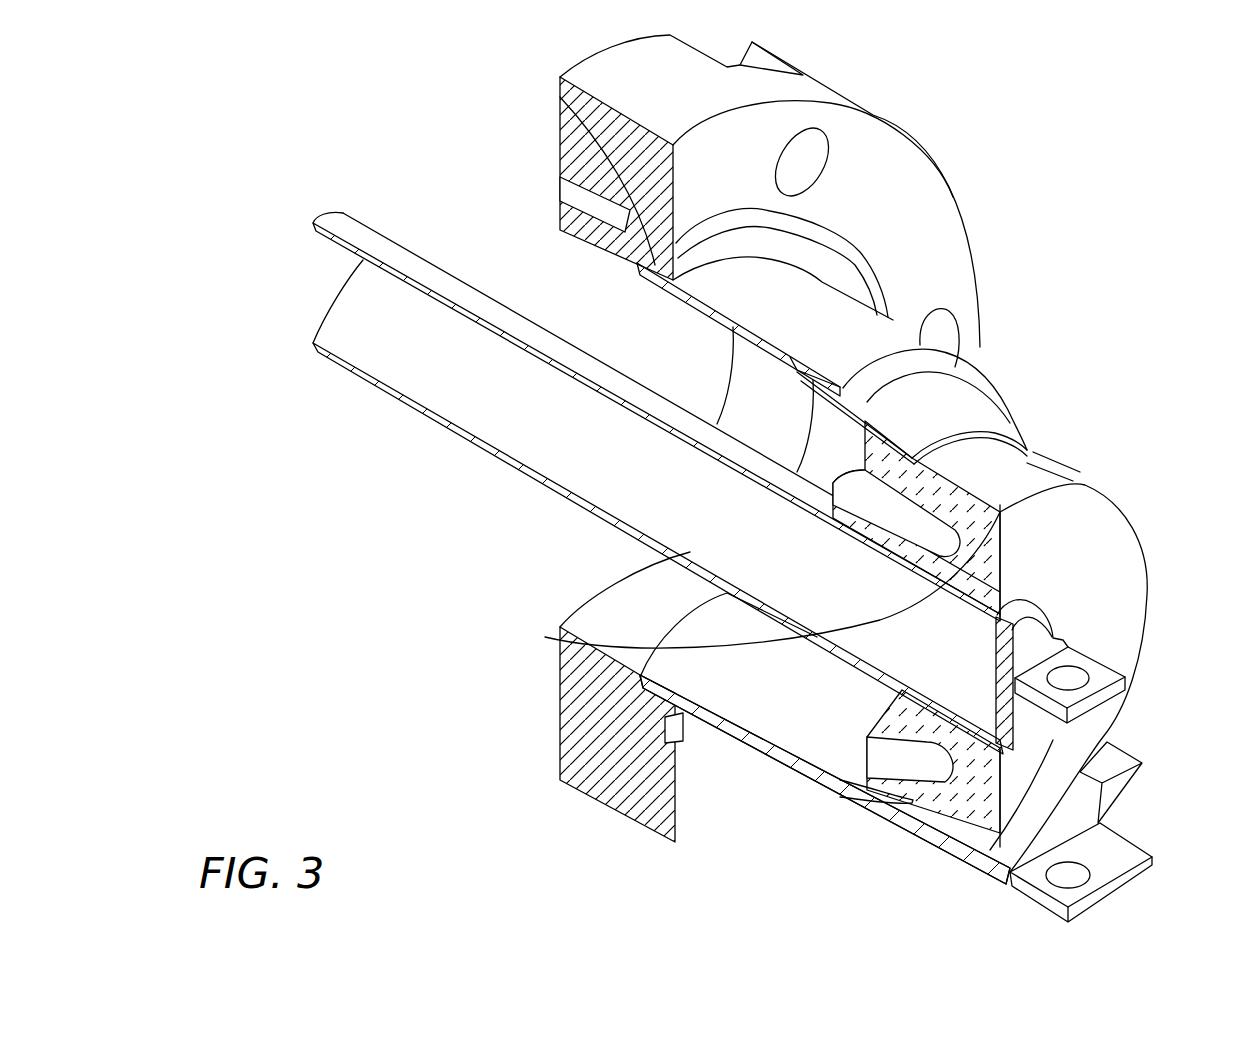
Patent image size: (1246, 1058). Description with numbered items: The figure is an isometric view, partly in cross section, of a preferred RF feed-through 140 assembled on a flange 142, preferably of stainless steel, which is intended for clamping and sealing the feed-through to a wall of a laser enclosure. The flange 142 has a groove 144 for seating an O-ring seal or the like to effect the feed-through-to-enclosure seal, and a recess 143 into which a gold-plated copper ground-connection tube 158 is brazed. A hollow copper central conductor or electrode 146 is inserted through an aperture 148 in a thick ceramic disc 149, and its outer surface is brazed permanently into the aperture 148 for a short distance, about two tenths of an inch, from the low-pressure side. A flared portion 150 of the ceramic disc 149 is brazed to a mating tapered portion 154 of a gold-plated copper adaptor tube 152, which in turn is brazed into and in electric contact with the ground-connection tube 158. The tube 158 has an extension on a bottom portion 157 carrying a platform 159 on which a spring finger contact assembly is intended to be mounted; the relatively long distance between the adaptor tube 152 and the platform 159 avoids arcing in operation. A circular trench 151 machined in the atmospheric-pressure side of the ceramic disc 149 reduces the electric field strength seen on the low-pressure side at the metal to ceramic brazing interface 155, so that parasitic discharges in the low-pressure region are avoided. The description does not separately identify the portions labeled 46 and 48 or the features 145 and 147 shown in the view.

The first conduit 46 is at (497, 236).
The second conduit 48 is at (1220, 557).
The RF feed-through 140 is at (346, 597).
The flange 142 is at (950, 166).
The recess 143 is at (640, 262).
The groove 144 is at (837, 248).
The mounting tab 145 is at (1103, 670).
The hollow central conductor 146 is at (462, 446).
The housing lower section 147 is at (560, 636).
The aperture 148 is at (977, 737).
The ceramic disc 149 is at (1072, 474).
The flared portion 150 is at (873, 777).
The circular trench 151 is at (927, 520).
The adaptor tube 152 is at (900, 378).
The tapered portion 154 is at (958, 400).
The metal to ceramic brazing interface 155 is at (977, 450).
The bottom portion 157 is at (1123, 768).
The ground-connection tube 158 is at (741, 748).
The platform 159 is at (1123, 850).